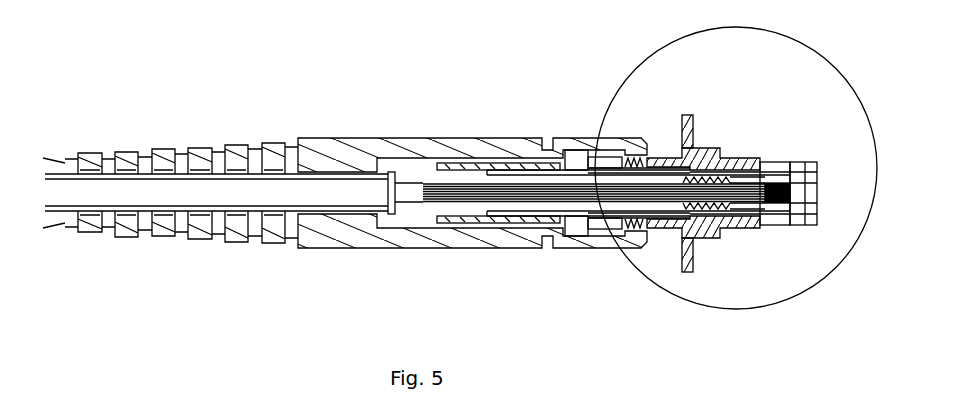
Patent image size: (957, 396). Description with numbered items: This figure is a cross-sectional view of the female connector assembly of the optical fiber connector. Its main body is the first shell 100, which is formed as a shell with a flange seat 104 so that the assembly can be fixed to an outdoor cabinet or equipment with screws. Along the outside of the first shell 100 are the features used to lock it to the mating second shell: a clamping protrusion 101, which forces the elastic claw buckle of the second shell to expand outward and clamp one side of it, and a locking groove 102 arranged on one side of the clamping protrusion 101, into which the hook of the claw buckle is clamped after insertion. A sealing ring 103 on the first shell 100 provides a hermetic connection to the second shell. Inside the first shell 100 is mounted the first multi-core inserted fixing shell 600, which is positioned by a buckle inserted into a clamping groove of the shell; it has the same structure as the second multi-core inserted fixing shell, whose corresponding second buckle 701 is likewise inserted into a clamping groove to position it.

The flange seat 104 is at (688, 118).
The locking groove 102 is at (747, 225).
The first shell 100 is at (720, 162).
The first multi-core inserted fixing shell 600 is at (737, 160).
The clamping protrusion 101 is at (757, 226).
The sealing ring 103 is at (793, 163).
The second buckle 701 is at (813, 163).